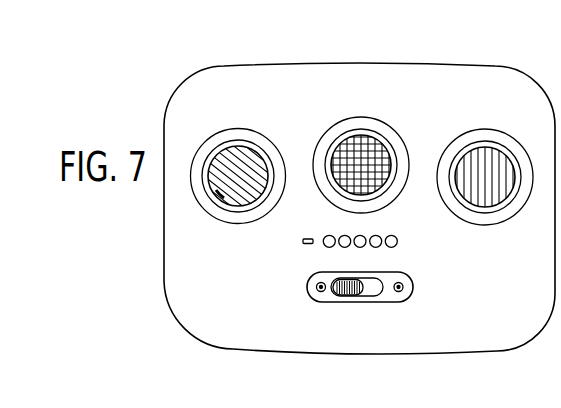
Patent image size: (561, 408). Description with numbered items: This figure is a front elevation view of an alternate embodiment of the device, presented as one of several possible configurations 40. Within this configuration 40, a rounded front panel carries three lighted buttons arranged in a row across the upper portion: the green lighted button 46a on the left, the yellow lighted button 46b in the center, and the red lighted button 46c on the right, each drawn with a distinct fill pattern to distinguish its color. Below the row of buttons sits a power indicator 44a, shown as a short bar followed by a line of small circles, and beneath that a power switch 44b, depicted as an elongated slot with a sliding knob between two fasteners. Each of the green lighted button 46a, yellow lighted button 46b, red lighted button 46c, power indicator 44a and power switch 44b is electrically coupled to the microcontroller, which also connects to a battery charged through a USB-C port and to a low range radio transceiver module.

The configuration 40 is at (153, 82).
The green lighted button 46a is at (252, 162).
The yellow lighted button 46b is at (373, 145).
The red lighted button 46c is at (497, 158).
The power indicator 44a is at (385, 225).
The power switch 44b is at (347, 296).